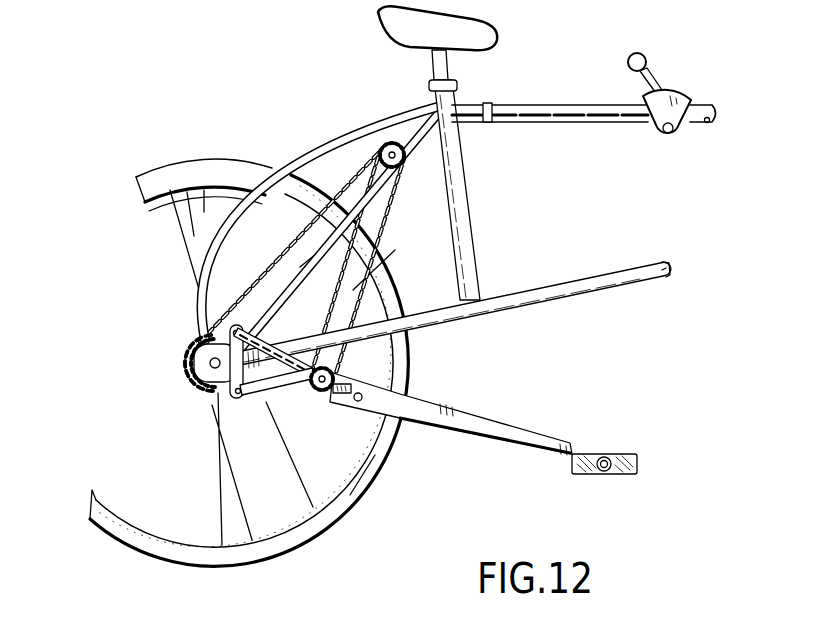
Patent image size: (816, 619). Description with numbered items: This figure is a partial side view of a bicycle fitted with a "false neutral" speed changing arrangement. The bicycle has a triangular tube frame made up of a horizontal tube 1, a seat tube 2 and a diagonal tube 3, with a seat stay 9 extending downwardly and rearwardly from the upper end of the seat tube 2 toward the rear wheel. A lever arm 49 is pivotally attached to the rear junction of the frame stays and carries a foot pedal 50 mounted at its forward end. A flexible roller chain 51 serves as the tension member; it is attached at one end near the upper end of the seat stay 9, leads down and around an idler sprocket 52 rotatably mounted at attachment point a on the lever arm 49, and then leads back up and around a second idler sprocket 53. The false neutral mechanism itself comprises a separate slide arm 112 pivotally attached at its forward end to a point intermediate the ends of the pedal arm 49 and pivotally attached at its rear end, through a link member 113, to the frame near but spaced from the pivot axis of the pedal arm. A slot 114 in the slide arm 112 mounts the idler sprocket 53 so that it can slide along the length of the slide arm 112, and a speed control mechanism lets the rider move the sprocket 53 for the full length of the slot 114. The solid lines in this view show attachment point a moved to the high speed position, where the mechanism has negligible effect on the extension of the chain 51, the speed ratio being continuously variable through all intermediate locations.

The horizontal tube 1 is at (571, 104).
The seat tube 2 is at (474, 212).
The diagonal tube 3 is at (600, 288).
The seat stay 9 is at (430, 105).
The lever arm 49 is at (481, 436).
The foot pedal 50 is at (637, 455).
The flexible roller chain 51 is at (355, 163).
The idler sprocket 52 is at (392, 140).
The second idler sprocket 53 is at (318, 392).
The slide arm 112 is at (356, 401).
The link member 113 is at (220, 393).
The slot 114 is at (290, 380).